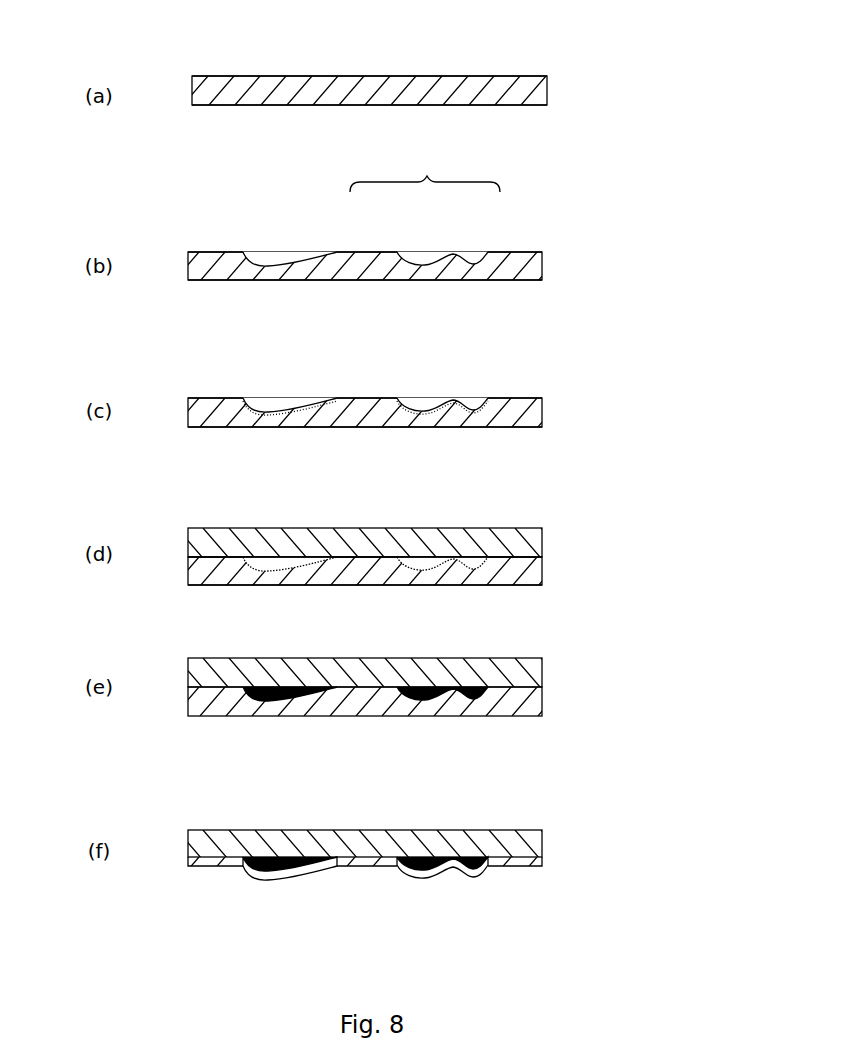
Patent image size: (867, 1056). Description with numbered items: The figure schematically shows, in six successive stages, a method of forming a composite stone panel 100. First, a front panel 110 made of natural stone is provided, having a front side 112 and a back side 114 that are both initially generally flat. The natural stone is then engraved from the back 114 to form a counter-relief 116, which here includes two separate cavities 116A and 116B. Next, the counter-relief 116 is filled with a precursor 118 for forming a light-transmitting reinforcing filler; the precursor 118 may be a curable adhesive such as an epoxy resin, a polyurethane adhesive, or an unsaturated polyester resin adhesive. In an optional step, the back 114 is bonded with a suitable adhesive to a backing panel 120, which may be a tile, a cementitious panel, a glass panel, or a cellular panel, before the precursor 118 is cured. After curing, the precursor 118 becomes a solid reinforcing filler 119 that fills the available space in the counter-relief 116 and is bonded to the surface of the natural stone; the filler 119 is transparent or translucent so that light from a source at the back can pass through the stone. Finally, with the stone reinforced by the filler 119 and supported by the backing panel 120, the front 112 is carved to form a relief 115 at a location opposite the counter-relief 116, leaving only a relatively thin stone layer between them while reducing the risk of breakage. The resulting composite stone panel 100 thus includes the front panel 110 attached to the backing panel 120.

The composite stone panel 100 is at (533, 822).
The front panel 110 is at (547, 90).
The front side 112 is at (407, 106).
The back side 114 is at (380, 76).
The relief 115 is at (293, 877).
The counter-relief 116 is at (253, 397).
The cavity 116A is at (267, 257).
The cavity 116B is at (433, 258).
The precursor 118 is at (265, 402).
The reinforcing filler 119 is at (433, 700).
The backing panel 120 is at (542, 540).